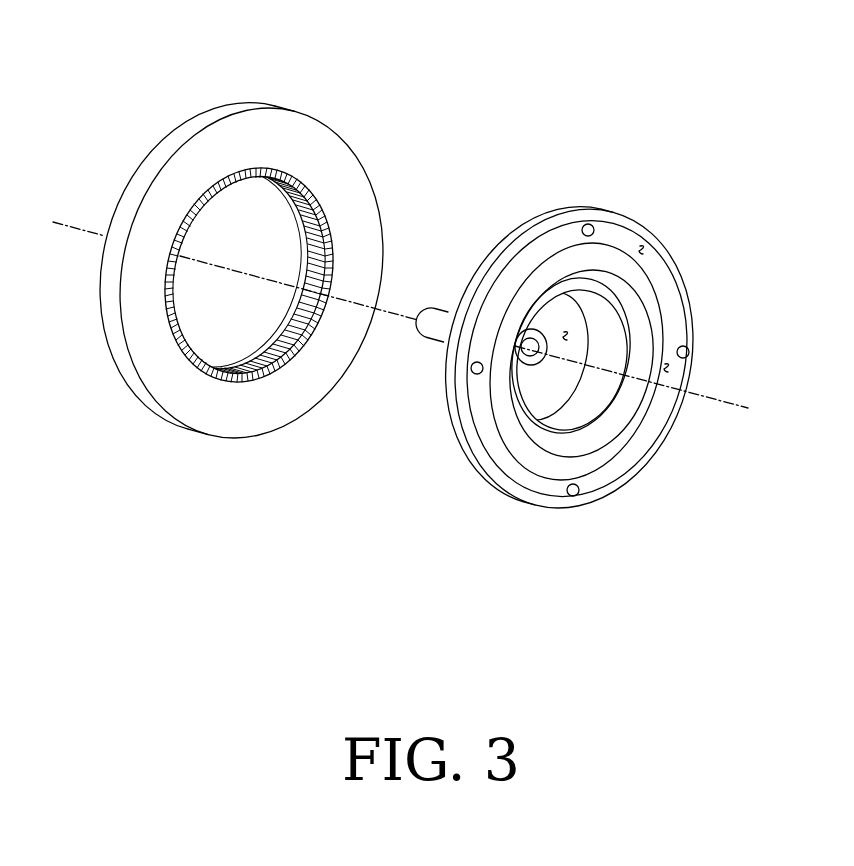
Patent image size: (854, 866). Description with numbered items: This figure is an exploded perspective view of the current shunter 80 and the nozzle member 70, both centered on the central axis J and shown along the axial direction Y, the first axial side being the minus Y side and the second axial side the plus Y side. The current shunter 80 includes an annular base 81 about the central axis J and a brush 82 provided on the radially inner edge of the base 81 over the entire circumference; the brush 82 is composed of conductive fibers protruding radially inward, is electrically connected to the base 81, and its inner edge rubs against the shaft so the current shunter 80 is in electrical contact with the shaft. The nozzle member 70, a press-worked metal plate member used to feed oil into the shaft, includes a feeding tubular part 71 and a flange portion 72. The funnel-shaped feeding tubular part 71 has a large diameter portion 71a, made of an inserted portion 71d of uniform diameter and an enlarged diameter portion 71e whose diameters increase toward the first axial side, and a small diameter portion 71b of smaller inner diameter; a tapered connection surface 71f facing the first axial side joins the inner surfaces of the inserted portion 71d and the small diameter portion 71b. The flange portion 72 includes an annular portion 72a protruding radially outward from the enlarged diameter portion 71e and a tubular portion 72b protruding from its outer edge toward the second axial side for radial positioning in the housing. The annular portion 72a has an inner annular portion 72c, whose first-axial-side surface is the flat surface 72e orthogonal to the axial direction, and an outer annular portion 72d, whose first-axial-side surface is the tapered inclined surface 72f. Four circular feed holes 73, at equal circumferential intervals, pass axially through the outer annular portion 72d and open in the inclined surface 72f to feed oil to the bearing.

The nozzle member 70 is at (598, 351).
The feeding tubular part 71 is at (572, 421).
The large diameter portion 71a is at (611, 443).
The small diameter portion 71b is at (437, 310).
The inserted portion 71d is at (582, 405).
The enlarged diameter portion 71e is at (622, 408).
The connection surface 71f is at (571, 339).
The flange portion 72 is at (621, 341).
The annular portion 72a is at (643, 361).
The tubular portion 72b is at (503, 242).
The inner annular portion 72c is at (625, 364).
The outer annular portion 72d is at (663, 271).
The flat surface 72e is at (672, 367).
The inclined surface 72f is at (645, 250).
The feed hole 73 is at (590, 225).
The current shunter 80 is at (251, 239).
The base 81 is at (318, 147).
The brush 82 is at (257, 168).
The central axis J is at (75, 228).
The axial direction Y is at (175, 540).